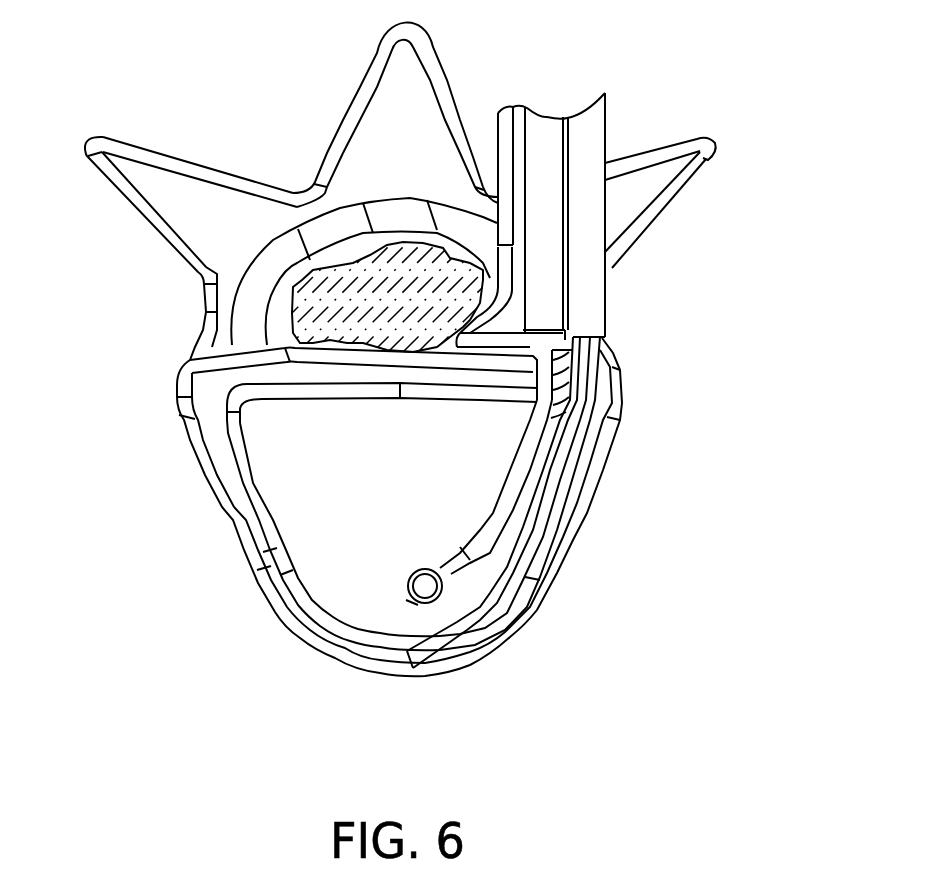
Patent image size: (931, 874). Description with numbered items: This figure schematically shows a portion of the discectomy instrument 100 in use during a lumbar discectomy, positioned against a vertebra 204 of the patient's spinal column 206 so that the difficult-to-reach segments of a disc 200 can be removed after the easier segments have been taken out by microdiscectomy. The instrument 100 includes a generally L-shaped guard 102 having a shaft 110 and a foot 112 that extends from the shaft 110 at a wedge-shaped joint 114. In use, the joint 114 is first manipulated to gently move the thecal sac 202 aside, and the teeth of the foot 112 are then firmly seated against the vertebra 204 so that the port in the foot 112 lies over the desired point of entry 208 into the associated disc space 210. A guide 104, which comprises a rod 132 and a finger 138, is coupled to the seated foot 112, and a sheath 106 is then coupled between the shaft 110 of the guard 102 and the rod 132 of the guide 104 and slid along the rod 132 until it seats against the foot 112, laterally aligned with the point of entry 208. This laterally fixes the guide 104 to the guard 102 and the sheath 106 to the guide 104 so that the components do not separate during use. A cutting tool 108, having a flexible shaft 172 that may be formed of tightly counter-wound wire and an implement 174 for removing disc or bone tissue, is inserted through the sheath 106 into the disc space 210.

The discectomy instrument 100 is at (575, 369).
The guard 102 is at (492, 147).
The guide 104 is at (617, 300).
The sheath 106 is at (551, 142).
The cutting tool 108 is at (465, 570).
The shaft 110 is at (507, 127).
The foot 112 is at (473, 337).
The joint 114 is at (460, 340).
The rod 132 is at (605, 143).
The finger 138 is at (587, 392).
The flexible shaft 172 is at (523, 473).
The implement 174 is at (420, 606).
The disc 200 is at (373, 557).
The thecal sac 202 is at (347, 261).
The vertebra 204 is at (232, 505).
The spinal column 206 is at (168, 409).
The point of entry 208 is at (533, 353).
The disc space 210 is at (299, 584).